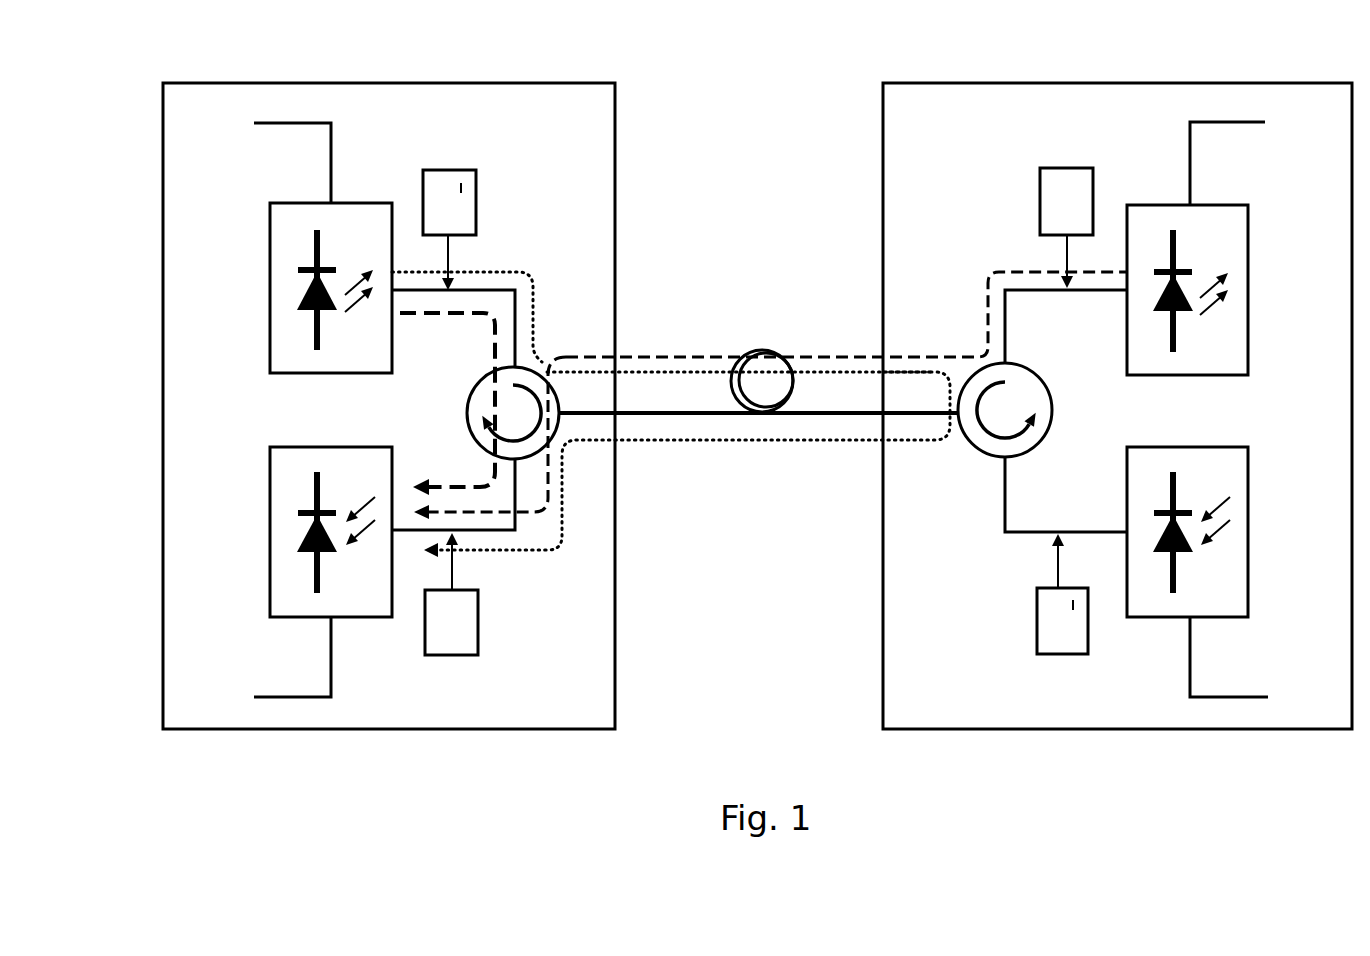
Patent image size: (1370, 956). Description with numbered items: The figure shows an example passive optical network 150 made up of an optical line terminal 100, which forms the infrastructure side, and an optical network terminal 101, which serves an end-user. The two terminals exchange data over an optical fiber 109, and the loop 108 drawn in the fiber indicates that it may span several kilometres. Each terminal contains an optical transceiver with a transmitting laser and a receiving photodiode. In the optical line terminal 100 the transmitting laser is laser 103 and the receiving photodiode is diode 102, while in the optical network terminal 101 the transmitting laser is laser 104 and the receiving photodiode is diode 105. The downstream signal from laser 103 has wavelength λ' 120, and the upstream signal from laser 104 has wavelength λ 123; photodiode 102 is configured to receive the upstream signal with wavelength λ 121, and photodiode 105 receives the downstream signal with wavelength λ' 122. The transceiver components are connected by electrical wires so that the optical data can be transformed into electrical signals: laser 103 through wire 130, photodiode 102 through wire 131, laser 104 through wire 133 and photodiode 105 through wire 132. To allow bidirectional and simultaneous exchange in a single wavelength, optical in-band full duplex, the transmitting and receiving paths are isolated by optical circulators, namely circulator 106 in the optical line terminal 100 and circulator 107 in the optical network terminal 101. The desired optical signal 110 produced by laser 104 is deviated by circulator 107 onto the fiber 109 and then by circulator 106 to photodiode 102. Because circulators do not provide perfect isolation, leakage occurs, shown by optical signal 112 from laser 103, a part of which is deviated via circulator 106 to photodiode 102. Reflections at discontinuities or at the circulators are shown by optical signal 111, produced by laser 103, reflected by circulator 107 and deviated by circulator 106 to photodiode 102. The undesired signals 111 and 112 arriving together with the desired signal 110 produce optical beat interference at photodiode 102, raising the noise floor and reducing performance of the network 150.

The optical line terminal 100 is at (615, 700).
The optical network terminal 101 is at (883, 706).
The photodiode 102 is at (270, 588).
The laser 103 is at (270, 334).
The laser 104 is at (1248, 295).
The photodiode 105 is at (1248, 592).
The optical circulator 106 is at (527, 367).
The optical circulator 107 is at (972, 380).
The loop 108 is at (768, 340).
The optical fiber 109 is at (631, 415).
The optical signal 110 is at (526, 518).
The optical signal 111 is at (514, 270).
The optical signal 112 is at (428, 318).
The wavelength λ' 120 is at (477, 186).
The wavelength λ 121 is at (478, 646).
The wavelength λ' 122 is at (1037, 620).
The wavelength λ 123 is at (1040, 182).
The wire 130 is at (270, 126).
The wire 131 is at (282, 700).
The wire 132 is at (1228, 700).
The wire 133 is at (1252, 126).
The passive optical network 150 is at (713, 82).